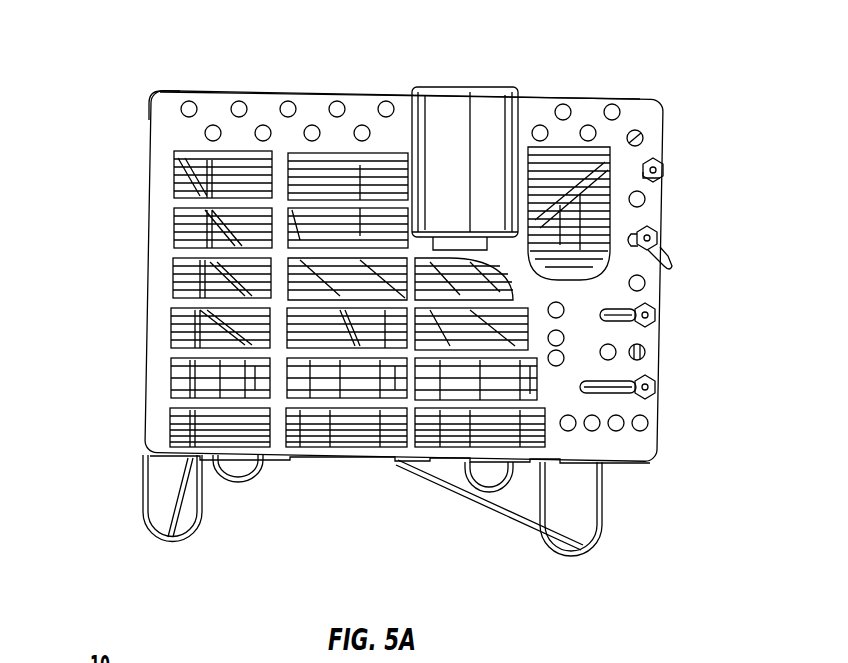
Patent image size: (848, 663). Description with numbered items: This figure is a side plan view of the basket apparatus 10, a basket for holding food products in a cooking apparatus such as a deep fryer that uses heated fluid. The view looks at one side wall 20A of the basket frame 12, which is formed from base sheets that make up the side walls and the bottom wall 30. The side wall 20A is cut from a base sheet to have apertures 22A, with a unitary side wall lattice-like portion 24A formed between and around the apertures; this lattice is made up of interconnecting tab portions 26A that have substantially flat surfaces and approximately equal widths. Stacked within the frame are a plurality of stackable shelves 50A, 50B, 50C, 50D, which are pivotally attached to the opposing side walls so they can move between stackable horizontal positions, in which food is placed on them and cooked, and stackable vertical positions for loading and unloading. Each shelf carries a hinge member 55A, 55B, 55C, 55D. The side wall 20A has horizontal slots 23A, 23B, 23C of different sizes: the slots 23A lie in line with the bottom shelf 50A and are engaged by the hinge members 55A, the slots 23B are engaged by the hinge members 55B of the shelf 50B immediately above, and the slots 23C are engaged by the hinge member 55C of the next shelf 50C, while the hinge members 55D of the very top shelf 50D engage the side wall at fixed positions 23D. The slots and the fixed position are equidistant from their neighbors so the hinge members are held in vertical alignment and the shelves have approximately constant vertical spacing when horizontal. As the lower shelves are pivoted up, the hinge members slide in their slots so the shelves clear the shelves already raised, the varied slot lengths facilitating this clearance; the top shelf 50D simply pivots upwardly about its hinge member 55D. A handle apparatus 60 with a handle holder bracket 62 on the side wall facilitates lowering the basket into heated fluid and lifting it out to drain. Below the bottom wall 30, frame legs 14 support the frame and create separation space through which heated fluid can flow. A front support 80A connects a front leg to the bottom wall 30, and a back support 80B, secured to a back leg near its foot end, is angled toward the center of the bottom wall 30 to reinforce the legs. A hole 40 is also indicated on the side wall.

The basket apparatus 10 is at (208, 98).
The basket frame 12 is at (242, 95).
The frame legs 14 is at (143, 520).
The side wall 20A is at (310, 100).
The apertures 22A is at (330, 385).
The side wall lattice-like portion 24A is at (371, 330).
The interconnecting tab portions 26A is at (445, 405).
The bottom wall 30 is at (173, 437).
The hole 40 is at (165, 100).
The stackable shelf 50A is at (175, 395).
The stackable shelf 50B is at (175, 325).
The stackable shelf 50C is at (175, 238).
The stackable shelf 50D is at (175, 165).
The hinge member 55A is at (660, 392).
The hinge member 55B is at (660, 316).
The hinge member 55C is at (660, 240).
The hinge member 55D is at (657, 165).
The horizontal slot 23A is at (605, 392).
The horizontal slot 23B is at (655, 327).
The horizontal slot 23C is at (668, 268).
The fixed position 23D is at (660, 180).
The handle apparatus 60 is at (438, 125).
The handle holder bracket 62 is at (485, 100).
The front support 80A is at (176, 538).
The back support 80B is at (517, 522).